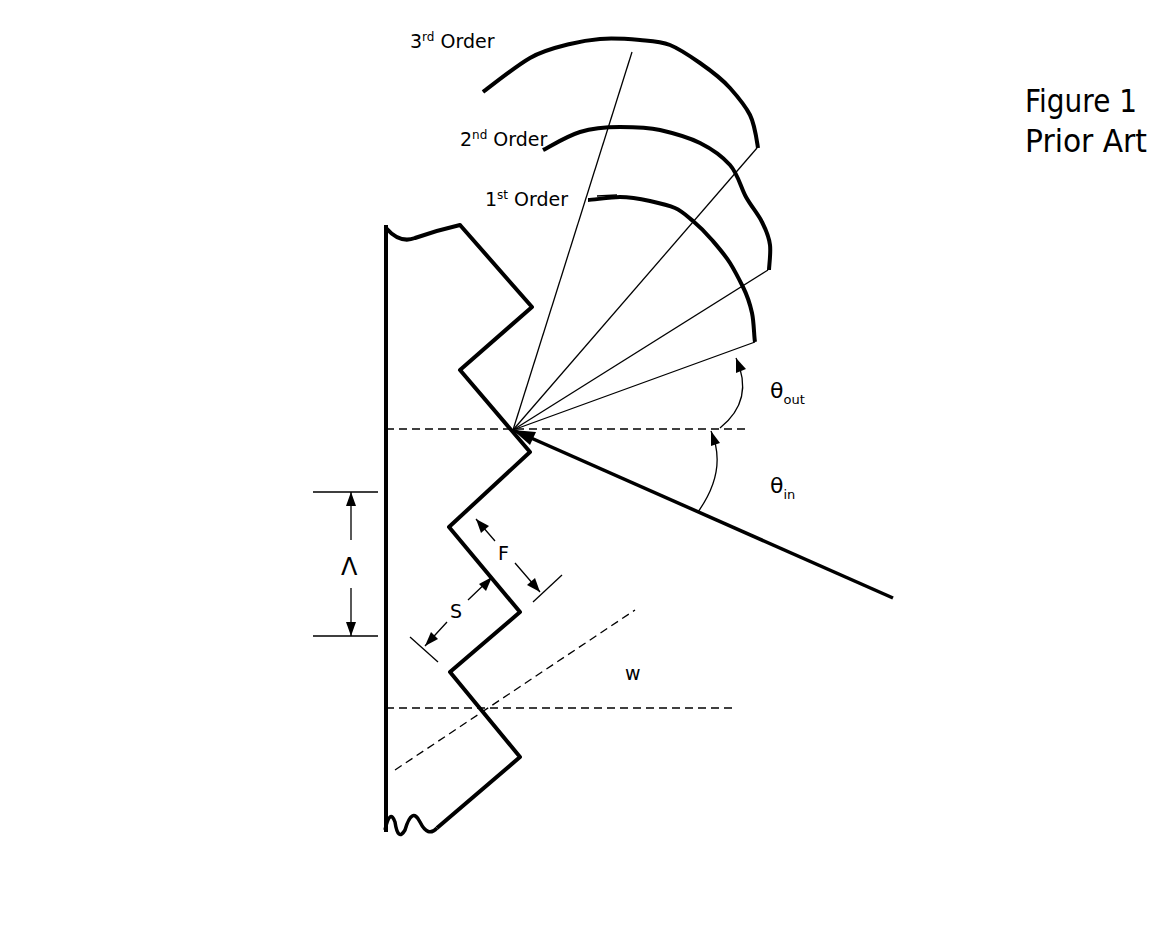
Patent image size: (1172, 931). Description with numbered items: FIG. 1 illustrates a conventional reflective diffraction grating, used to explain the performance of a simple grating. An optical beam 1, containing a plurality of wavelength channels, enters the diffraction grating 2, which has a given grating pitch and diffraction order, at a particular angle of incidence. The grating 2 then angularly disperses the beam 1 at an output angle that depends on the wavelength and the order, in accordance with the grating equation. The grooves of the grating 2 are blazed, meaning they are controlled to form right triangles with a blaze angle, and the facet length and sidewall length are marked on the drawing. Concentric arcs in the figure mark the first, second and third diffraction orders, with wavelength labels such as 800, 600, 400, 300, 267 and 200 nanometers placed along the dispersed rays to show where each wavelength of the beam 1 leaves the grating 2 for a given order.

The optical beam 1 is at (843, 573).
The diffraction grating 2 is at (413, 320).
The third order diffraction arc (267 nm) 267 is at (620, 76).
The second order diffraction arc (400 nm) 400 is at (641, 266).
The first order diffraction arc (800 nm) 800 is at (634, 241).
The 600 nm diffracted ray 600 is at (635, 289).
The 200 nm diffracted ray 200 is at (688, 272).
The 300 nm wavelength label 300 is at (675, 186).